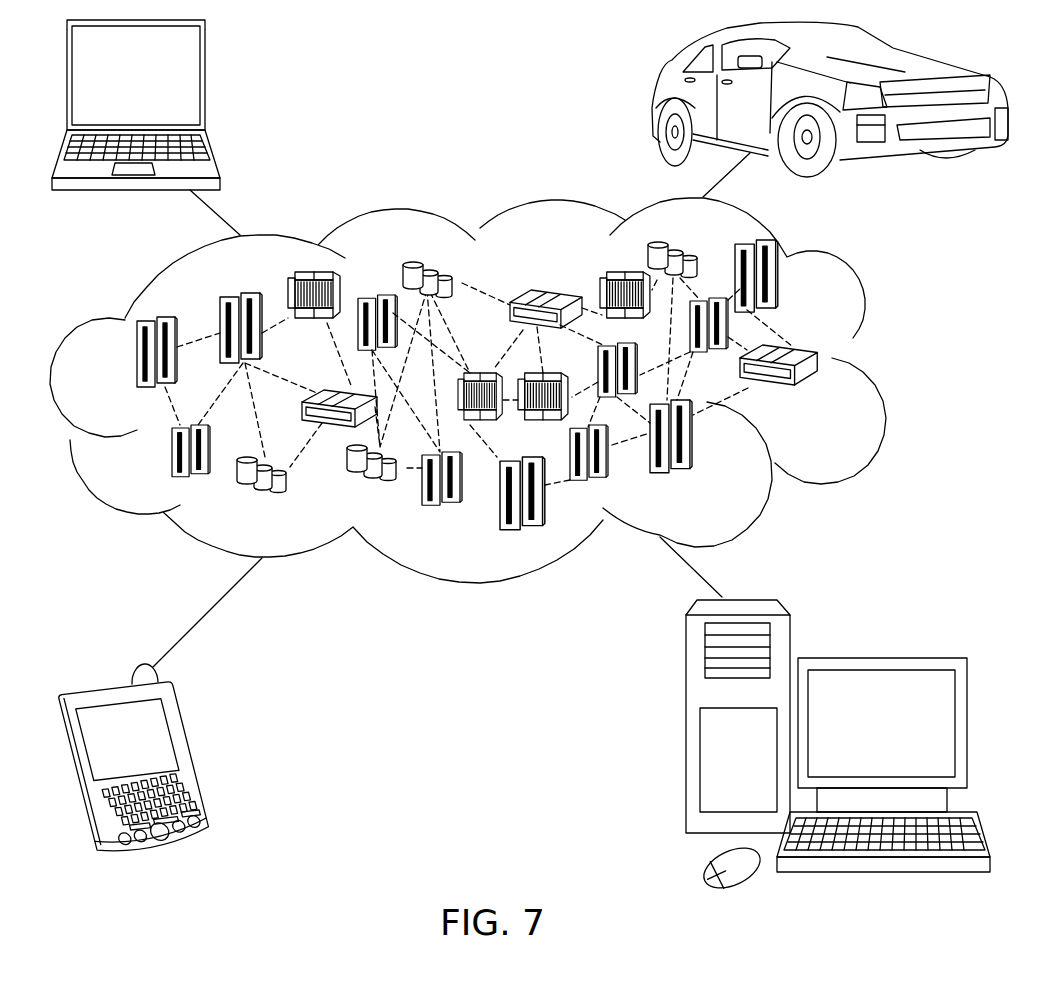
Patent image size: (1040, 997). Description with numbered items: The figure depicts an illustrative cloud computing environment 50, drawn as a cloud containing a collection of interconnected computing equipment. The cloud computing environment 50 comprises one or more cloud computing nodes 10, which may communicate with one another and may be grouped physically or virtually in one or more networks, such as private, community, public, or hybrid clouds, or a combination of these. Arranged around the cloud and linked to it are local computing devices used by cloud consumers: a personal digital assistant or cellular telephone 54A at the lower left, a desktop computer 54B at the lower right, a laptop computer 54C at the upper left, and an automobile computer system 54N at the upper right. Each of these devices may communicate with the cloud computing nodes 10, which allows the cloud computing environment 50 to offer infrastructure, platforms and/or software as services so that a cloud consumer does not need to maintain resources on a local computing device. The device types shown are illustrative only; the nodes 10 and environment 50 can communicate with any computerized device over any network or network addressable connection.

The cloud computing node 10 is at (823, 393).
The cloud computing environment 50 is at (882, 365).
The personal digital assistant or cellular telephone 54A is at (190, 755).
The desktop computer 54B is at (880, 658).
The laptop computer 54C is at (205, 82).
The automobile computer system 54N is at (653, 98).